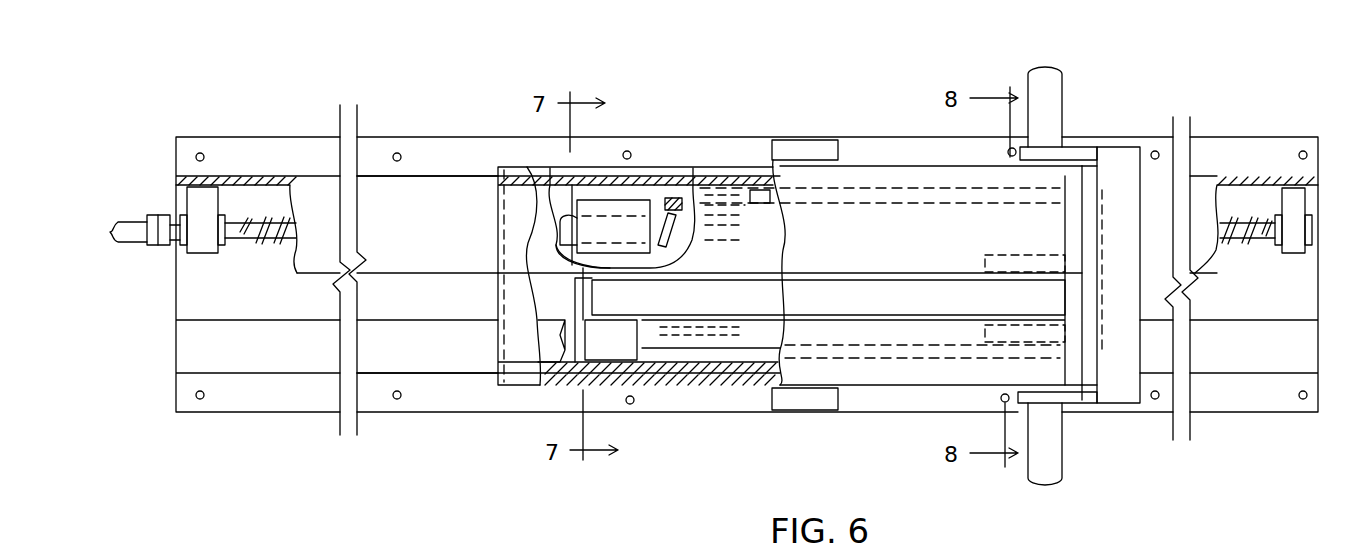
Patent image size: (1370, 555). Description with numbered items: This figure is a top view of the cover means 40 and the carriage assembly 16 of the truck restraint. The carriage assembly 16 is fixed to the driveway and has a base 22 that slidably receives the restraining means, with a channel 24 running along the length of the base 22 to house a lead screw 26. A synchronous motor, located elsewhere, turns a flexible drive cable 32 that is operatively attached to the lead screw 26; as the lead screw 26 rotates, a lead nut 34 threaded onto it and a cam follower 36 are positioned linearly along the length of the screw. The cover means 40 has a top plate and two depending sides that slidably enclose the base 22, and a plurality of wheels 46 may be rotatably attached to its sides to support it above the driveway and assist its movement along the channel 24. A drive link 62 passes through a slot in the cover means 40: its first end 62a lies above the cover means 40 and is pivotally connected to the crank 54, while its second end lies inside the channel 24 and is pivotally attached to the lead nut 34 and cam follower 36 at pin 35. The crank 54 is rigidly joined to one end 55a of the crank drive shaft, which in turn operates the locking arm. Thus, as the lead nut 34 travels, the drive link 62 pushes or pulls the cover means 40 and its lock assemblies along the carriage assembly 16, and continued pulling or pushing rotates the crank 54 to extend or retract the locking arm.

The carriage assembly 16 is at (362, 434).
The base 22 is at (425, 190).
The channel 24 is at (420, 307).
The lead screw 26 is at (267, 213).
The flexible drive cable 32 is at (128, 217).
The lead nut 34 is at (617, 212).
The pin 35 is at (583, 272).
The cam follower 36 is at (625, 350).
The cover means 40 is at (518, 385).
The wheels 46 is at (800, 140).
The crank 54 is at (1115, 160).
The end of crank drive shaft 55a is at (1055, 90).
The drive link 62 is at (870, 300).
The first end of drive link 62a is at (1075, 300).